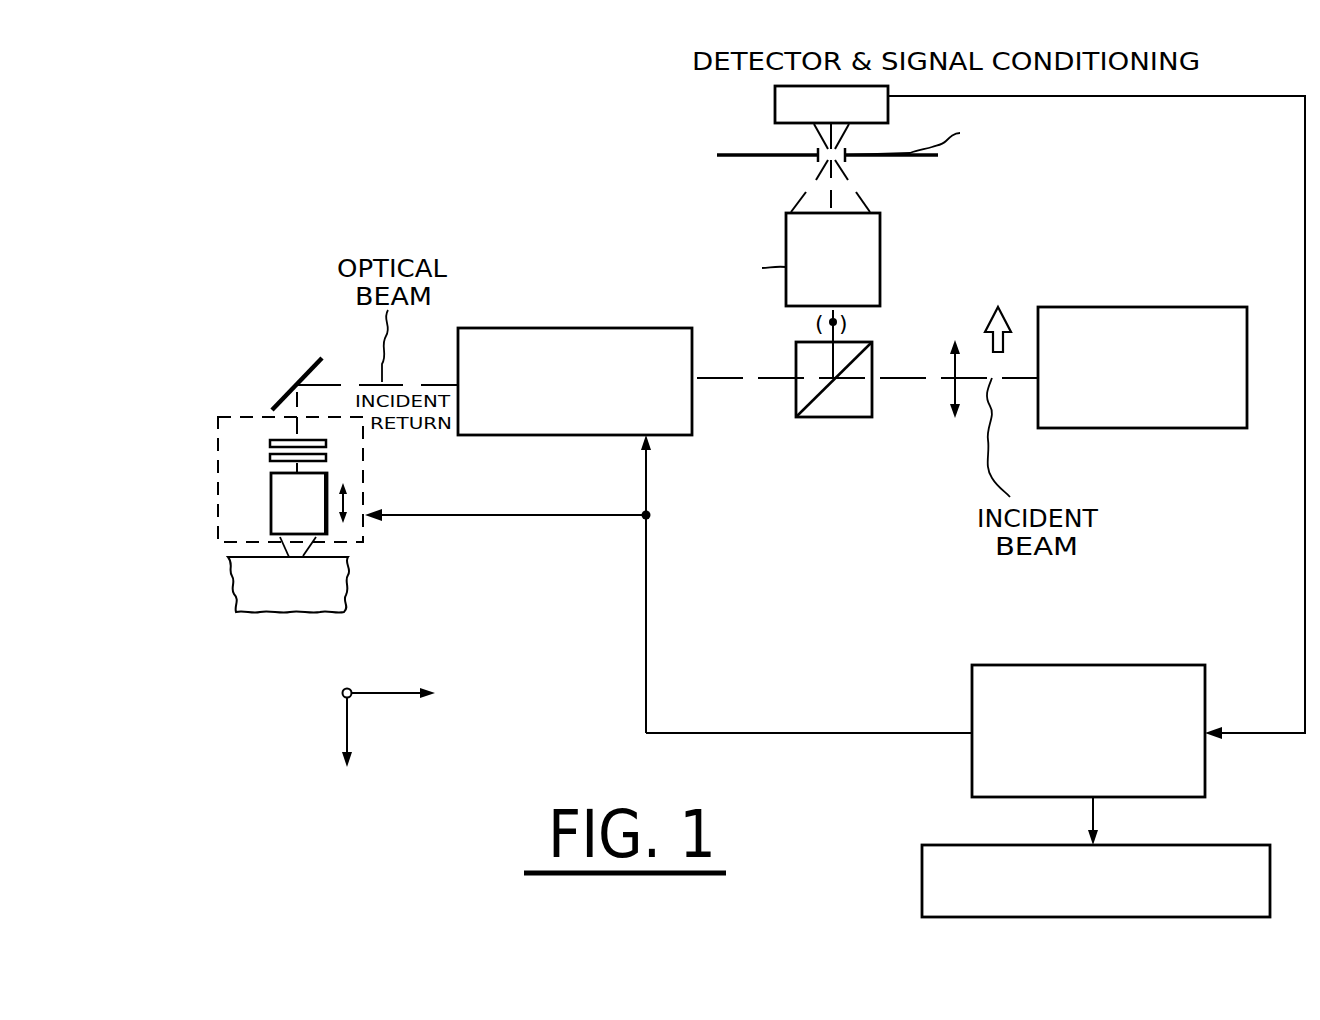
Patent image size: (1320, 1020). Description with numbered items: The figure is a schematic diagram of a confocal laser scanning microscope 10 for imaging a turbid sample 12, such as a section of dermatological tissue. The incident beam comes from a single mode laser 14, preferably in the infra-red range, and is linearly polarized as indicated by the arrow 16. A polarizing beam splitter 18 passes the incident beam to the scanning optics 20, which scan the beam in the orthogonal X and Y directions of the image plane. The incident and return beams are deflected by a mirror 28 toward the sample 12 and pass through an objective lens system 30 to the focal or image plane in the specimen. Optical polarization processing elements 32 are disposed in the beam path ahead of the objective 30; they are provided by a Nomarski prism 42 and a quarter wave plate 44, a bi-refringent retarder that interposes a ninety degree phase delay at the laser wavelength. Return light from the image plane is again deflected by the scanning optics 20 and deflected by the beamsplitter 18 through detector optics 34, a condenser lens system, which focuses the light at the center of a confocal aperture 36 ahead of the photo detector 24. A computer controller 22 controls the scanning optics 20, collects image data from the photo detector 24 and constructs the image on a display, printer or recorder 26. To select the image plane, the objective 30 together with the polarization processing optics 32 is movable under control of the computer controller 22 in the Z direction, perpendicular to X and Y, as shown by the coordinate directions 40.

The confocal laser scanning microscope 10 is at (595, 202).
The turbid sample 12 is at (312, 582).
The single mode laser 14 is at (1137, 428).
The arrow 16 is at (998, 308).
The polarizing beam splitter 18 is at (833, 418).
The scanning optics 20 is at (670, 436).
The computer controller 22 is at (972, 762).
The photo detector 24 is at (775, 100).
The display, printer or recorder 26 is at (922, 873).
The mirror 28 is at (290, 382).
The objective lens system 30 is at (270, 505).
The optical polarization processing elements 32 is at (273, 428).
The detector optics 34 is at (880, 244).
The confocal aperture 36 is at (842, 153).
The X, Y, Z coordinate directions 40 is at (413, 749).
The Nomarski prism 42 is at (326, 446).
The quarter wave plate 44 is at (270, 448).